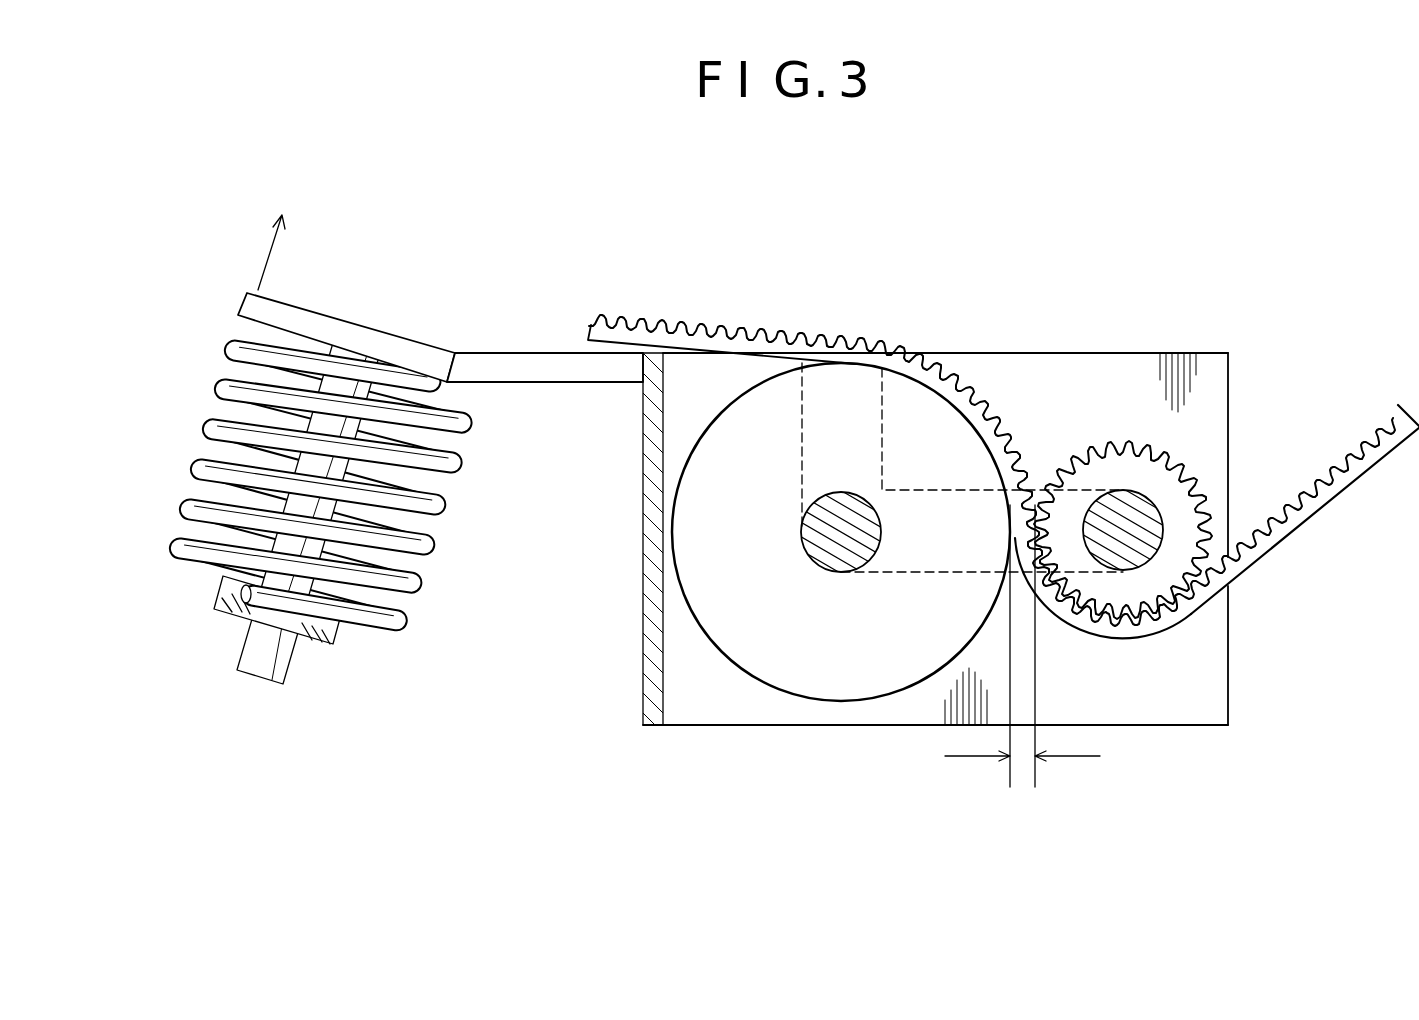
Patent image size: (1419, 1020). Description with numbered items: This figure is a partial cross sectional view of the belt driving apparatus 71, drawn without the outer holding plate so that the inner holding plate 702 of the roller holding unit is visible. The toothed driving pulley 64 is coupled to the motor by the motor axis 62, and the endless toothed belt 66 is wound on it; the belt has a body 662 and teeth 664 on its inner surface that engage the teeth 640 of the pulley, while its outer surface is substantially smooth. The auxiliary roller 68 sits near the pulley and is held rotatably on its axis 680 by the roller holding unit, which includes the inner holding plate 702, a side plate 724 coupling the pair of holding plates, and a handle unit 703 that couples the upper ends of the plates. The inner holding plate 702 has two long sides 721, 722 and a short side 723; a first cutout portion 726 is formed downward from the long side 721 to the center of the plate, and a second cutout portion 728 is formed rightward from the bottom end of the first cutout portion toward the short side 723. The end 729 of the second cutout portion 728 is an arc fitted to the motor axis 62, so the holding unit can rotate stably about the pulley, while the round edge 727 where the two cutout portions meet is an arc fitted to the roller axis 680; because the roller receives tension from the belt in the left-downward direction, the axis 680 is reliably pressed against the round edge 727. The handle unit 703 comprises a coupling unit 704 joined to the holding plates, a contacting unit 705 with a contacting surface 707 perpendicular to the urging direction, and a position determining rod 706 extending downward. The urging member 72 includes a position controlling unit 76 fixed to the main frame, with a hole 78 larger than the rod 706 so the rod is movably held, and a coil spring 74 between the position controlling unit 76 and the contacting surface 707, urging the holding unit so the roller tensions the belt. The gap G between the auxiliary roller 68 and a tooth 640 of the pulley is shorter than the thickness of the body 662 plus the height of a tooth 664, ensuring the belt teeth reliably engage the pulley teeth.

The handle unit 703 is at (355, 168).
The position determining rod 706 is at (353, 387).
The contacting unit 705 is at (423, 360).
The coupling unit 704 is at (553, 372).
The contacting surface 707 is at (238, 320).
The urging member 72 is at (511, 619).
The coil spring 74 is at (432, 550).
The position controlling unit 76 is at (333, 650).
The hole 78 is at (252, 628).
The belt driving apparatus 71 is at (949, 194).
The inner holding plate 702 is at (712, 705).
The long side 721 is at (1053, 350).
The long side 722 is at (825, 732).
The short side 723 is at (1235, 618).
The side plate 724 is at (645, 458).
The auxiliary roller 68 is at (703, 512).
The axis of the auxiliary roller 680 is at (858, 560).
The round edge 727 is at (808, 558).
The first cutout portion 726 is at (813, 445).
The second cutout portion 728 is at (928, 573).
The toothed driving pulley 64 is at (1170, 485).
The teeth of the toothed driving pulley 640 is at (1097, 450).
The motor axis 62 is at (1121, 546).
The toothed belt 66 is at (782, 340).
The body of the toothed belt 662 is at (990, 440).
The teeth of the toothed belt 664 is at (857, 338).
The end of the second cutout portion 729 is at (1137, 550).
The gap G is at (1025, 770).